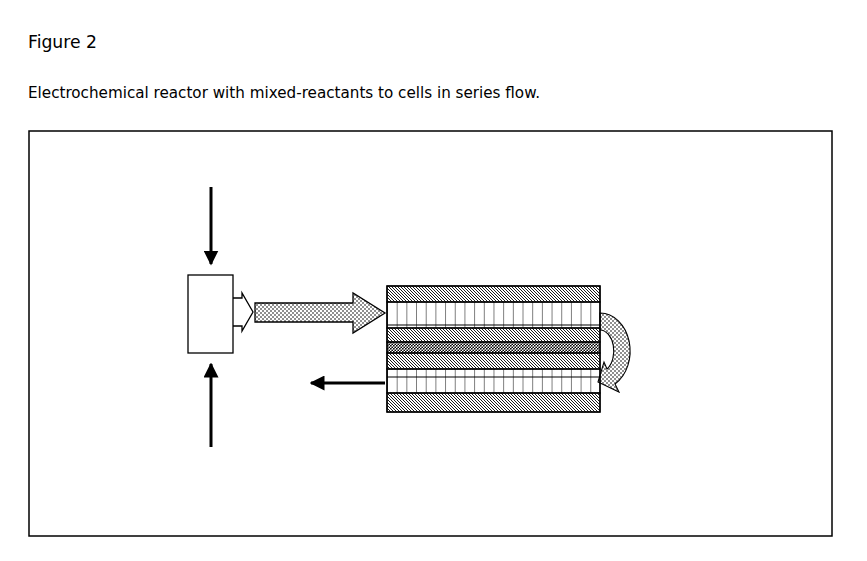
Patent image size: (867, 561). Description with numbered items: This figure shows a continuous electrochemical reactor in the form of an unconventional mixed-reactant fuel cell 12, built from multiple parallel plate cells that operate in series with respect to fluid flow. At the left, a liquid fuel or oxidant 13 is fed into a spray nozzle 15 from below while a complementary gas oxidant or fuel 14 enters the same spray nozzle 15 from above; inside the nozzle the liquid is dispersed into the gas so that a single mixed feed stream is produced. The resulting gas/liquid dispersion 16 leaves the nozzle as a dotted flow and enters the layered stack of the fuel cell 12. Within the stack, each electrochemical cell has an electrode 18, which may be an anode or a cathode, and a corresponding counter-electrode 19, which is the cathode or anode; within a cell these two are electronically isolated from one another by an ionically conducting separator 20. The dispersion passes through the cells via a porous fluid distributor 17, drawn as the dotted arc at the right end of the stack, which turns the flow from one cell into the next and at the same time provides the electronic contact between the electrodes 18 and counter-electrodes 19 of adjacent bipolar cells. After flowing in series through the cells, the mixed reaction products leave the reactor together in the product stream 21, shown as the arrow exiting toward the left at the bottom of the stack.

The mixed-reactant fuel cell 12 is at (452, 284).
The liquid fuel or oxidant 13 is at (199, 414).
The gas oxidant or fuel 14 is at (202, 214).
The spray nozzle 15 is at (184, 315).
The gas/liquid dispersion 16 is at (350, 296).
The porous fluid distributor 17 is at (602, 376).
The electrode 18 is at (541, 364).
The counter-electrode 19 is at (555, 406).
The ionically conducting separator 20 is at (606, 350).
The product stream 21 is at (324, 387).